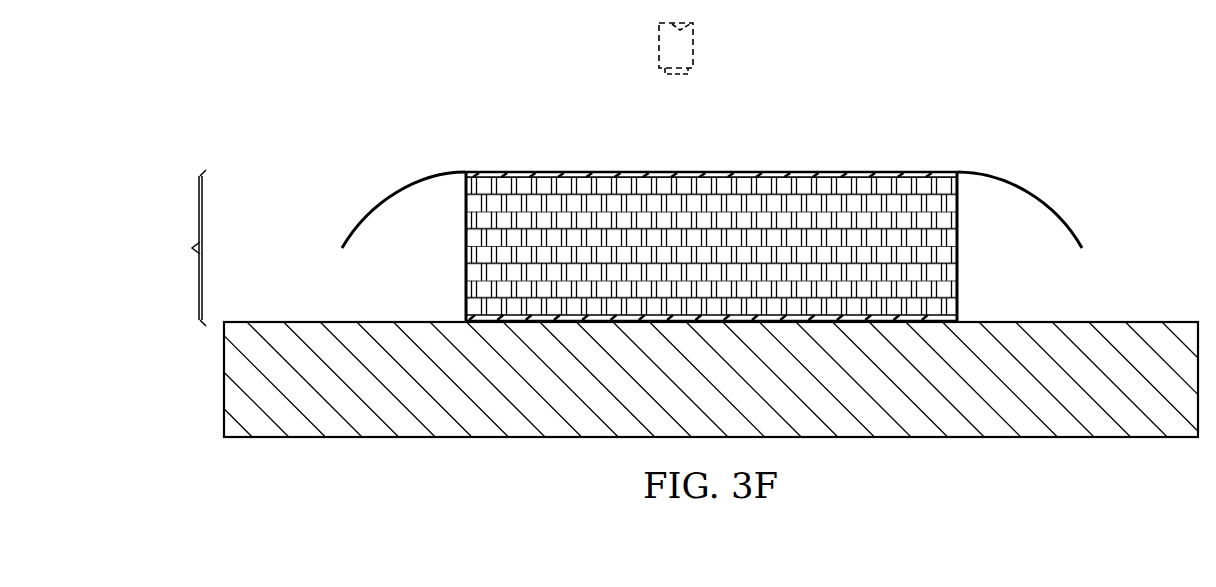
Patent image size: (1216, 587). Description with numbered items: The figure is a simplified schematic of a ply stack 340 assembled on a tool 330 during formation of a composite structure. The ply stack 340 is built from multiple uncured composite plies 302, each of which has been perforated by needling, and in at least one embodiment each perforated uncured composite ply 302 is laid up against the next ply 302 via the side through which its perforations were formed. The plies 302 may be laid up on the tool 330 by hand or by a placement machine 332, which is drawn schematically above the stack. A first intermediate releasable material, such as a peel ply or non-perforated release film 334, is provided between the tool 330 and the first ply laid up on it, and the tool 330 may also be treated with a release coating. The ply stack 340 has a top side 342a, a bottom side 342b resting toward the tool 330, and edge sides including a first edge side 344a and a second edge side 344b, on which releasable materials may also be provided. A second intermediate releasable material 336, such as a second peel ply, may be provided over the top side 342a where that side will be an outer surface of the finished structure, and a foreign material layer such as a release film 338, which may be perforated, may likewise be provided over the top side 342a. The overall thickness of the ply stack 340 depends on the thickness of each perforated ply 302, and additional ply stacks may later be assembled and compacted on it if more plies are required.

The uncured composite ply 302 is at (463, 270).
The tool 330 is at (213, 395).
The placement machine 332 is at (694, 53).
The non-perforated release film 334 is at (567, 322).
The second intermediate releasable material 336 is at (860, 172).
The release film 338 is at (1005, 175).
The ply stack 340 is at (174, 248).
The top side 342a is at (522, 172).
The bottom side 342b is at (890, 322).
The first edge side 344a is at (463, 238).
The second edge side 344b is at (960, 272).